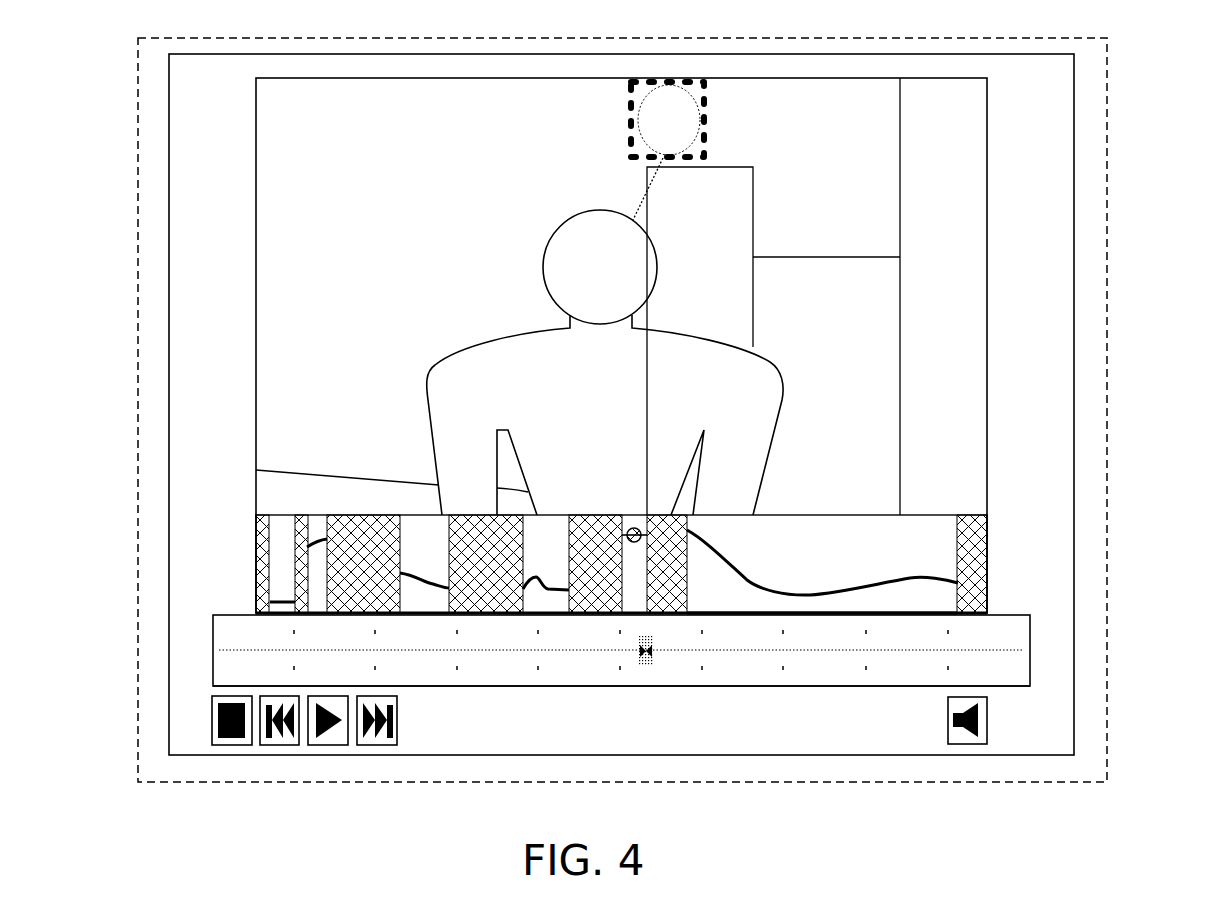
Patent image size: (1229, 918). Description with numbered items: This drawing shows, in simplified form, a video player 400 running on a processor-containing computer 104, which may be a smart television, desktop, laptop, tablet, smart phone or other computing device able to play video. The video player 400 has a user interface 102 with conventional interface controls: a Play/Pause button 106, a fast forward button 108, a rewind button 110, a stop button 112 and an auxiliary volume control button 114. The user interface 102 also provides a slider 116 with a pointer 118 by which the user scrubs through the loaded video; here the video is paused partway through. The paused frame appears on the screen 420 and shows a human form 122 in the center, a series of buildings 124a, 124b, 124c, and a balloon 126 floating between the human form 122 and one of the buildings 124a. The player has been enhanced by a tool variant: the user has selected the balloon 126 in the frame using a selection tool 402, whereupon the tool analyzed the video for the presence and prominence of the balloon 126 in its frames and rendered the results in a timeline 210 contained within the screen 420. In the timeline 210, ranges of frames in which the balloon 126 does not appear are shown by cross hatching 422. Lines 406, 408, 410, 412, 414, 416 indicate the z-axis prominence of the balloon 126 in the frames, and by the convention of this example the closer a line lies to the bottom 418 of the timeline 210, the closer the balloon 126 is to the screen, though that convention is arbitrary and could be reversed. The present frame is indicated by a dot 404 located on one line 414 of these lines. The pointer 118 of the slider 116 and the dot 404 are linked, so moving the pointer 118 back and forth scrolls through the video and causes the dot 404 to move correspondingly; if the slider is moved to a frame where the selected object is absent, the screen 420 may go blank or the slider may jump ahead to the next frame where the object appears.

The user interface 102 is at (813, 687).
The processor-containing computer 104 is at (1106, 310).
The Play/Pause button 106 is at (332, 745).
The fast forward button 108 is at (385, 745).
The rewind button 110 is at (278, 745).
The stop button 112 is at (232, 745).
The volume control button 114 is at (965, 745).
The slider 116 is at (230, 613).
The pointer 118 is at (638, 668).
The human figure 122 is at (505, 330).
The building 124a is at (710, 185).
The second building 124b is at (782, 268).
The building 124c is at (927, 120).
The balloon 126 is at (650, 112).
The timeline 210 is at (987, 560).
The video player 400 is at (1075, 442).
The selection tool 402 is at (630, 138).
The dot 404 is at (641, 528).
The line 406 is at (279, 600).
The line 408 is at (326, 540).
The line 410 is at (412, 572).
The line 412 is at (542, 572).
The line 414 is at (624, 531).
The line 416 is at (800, 593).
The bottom of the timeline 418 is at (733, 613).
The screen 420 is at (987, 185).
The cross hatching 422 is at (256, 520).